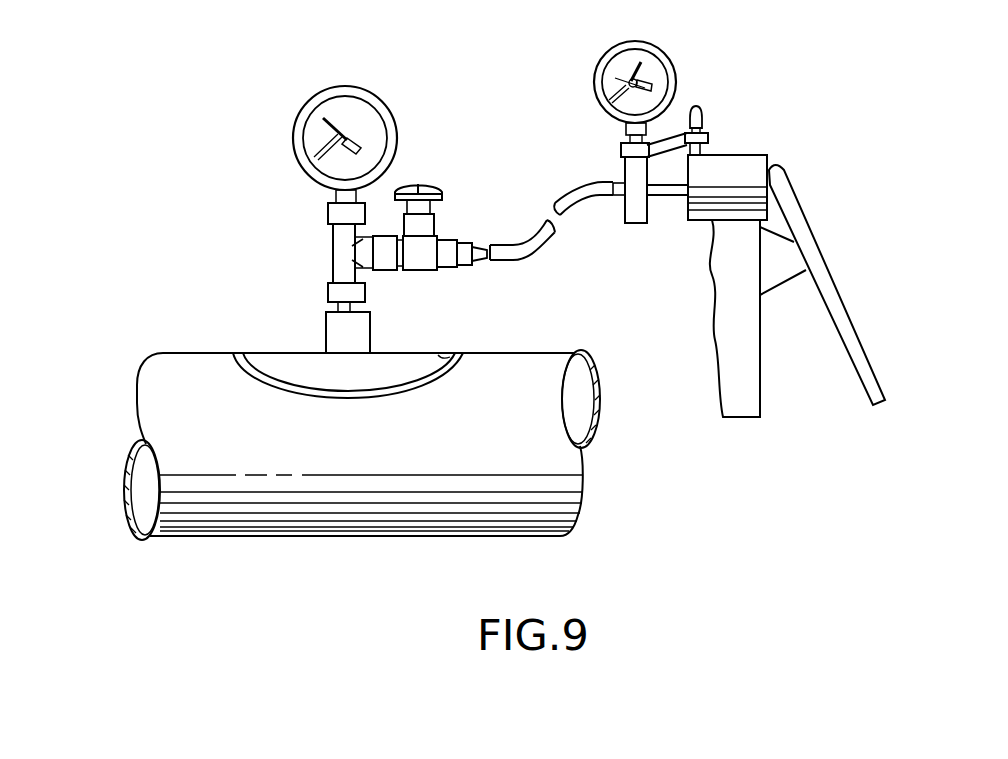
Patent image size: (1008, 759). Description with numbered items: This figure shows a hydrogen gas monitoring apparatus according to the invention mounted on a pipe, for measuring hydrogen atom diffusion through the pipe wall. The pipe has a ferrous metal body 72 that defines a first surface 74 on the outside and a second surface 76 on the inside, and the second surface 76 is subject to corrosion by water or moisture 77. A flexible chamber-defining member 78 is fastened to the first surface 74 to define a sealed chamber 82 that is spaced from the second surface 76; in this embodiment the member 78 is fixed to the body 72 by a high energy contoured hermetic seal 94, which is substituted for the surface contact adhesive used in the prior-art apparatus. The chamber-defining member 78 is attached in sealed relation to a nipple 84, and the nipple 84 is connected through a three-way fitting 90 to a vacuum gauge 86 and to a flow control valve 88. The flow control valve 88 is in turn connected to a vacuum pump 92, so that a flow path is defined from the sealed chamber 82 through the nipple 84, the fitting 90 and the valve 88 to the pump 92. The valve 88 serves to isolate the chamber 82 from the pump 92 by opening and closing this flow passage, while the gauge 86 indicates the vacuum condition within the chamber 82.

The ferrous metal body 72 is at (583, 490).
The first surface 74 is at (532, 352).
The second surface 76 is at (582, 395).
The water or moisture 77 is at (137, 480).
The flexible chamber-defining member 78 is at (272, 352).
The sealed chamber 82 is at (438, 355).
The nipple 84 is at (370, 335).
The vacuum gauge 86 is at (293, 112).
The flow control valve 88 is at (418, 183).
The three-way fitting 90 is at (333, 236).
The vacuum pump 92 is at (600, 150).
The high energy contoured hermetic seal 94 is at (242, 352).